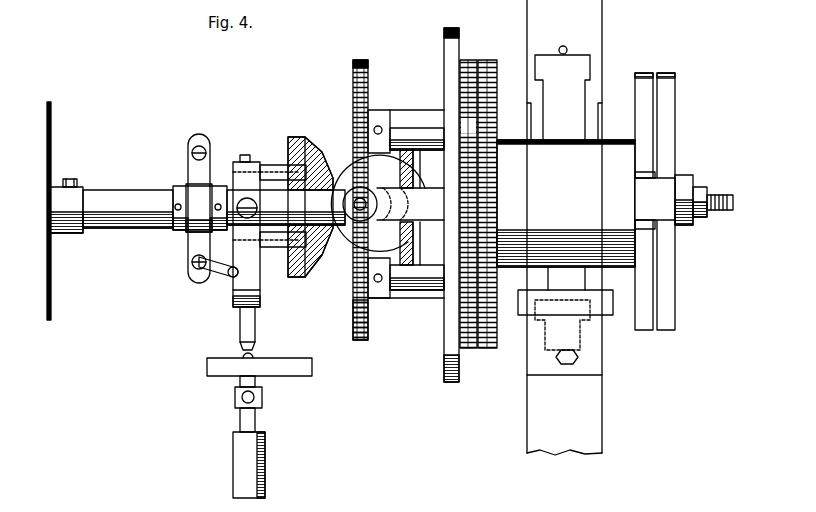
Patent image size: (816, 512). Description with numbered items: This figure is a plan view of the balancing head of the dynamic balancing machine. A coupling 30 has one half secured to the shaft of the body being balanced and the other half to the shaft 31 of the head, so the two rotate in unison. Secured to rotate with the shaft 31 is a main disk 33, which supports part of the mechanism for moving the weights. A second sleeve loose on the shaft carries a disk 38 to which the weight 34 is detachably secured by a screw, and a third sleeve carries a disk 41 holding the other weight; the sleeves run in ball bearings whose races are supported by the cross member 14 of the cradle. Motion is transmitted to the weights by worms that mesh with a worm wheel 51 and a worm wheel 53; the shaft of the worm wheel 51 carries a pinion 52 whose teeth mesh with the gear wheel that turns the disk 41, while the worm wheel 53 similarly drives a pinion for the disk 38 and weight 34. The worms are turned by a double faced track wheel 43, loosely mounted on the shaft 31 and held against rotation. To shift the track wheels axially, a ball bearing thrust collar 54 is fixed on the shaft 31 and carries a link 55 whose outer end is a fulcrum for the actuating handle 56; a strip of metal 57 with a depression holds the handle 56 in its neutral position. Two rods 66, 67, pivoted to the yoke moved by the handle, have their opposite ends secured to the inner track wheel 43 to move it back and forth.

The cross member 14 is at (603, 403).
The coupling 30 is at (52, 111).
The shaft 31 is at (115, 190).
The main disk 33 is at (459, 36).
The weight 34 is at (684, 200).
The disk 38 is at (675, 130).
The disk 41 is at (635, 115).
The inner track wheel 43 is at (318, 257).
The worm wheel 51 is at (353, 80).
The pinion 52 is at (497, 115).
The worm wheel 53 is at (368, 326).
The ball bearing thrust collar 54 is at (185, 182).
The link 55 is at (212, 272).
The actuating handle 56 is at (240, 468).
The strip of metal 57 is at (290, 376).
The rod 66 is at (275, 165).
The rod 67 is at (270, 247).